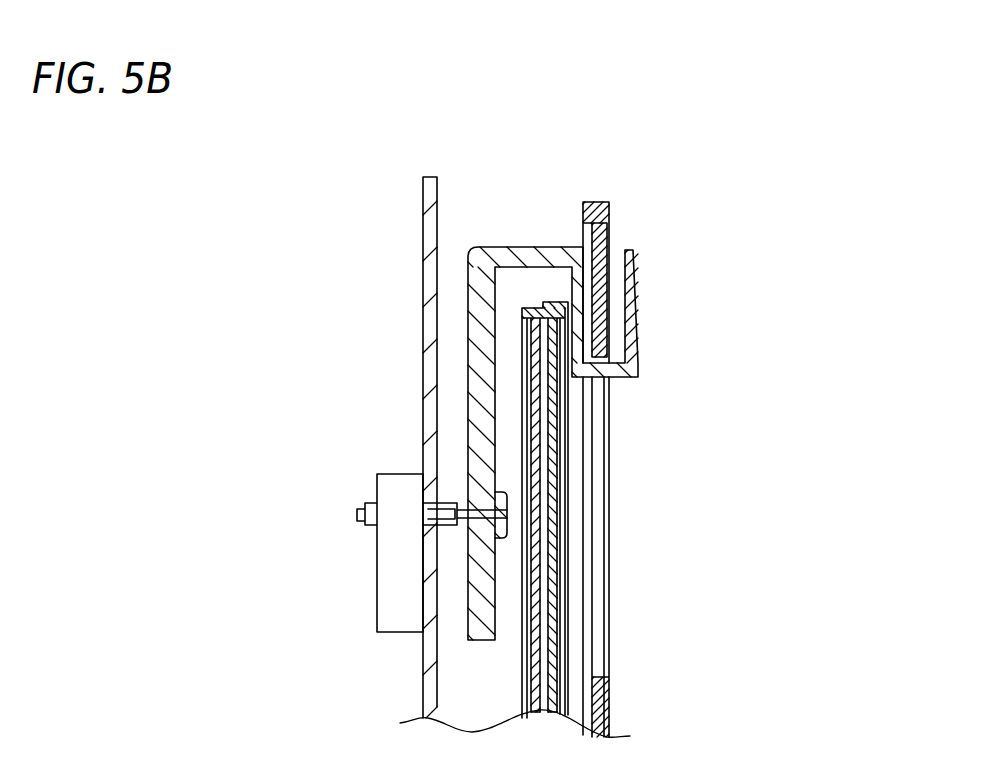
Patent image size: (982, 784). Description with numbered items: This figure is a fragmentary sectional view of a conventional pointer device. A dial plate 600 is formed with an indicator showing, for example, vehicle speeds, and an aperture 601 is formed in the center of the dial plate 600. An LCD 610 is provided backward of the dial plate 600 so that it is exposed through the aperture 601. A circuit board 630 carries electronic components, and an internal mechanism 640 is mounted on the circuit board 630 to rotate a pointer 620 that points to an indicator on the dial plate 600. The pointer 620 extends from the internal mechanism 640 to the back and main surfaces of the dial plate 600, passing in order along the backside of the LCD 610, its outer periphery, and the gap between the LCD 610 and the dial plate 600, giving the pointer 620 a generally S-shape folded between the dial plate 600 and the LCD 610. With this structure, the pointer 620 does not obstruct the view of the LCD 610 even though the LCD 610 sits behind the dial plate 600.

The dial plate 600 is at (610, 233).
The aperture 601 is at (610, 437).
The LCD 610 is at (553, 452).
The pointer 620 is at (523, 247).
The circuit board 630 is at (438, 227).
The internal mechanism 640 is at (400, 473).